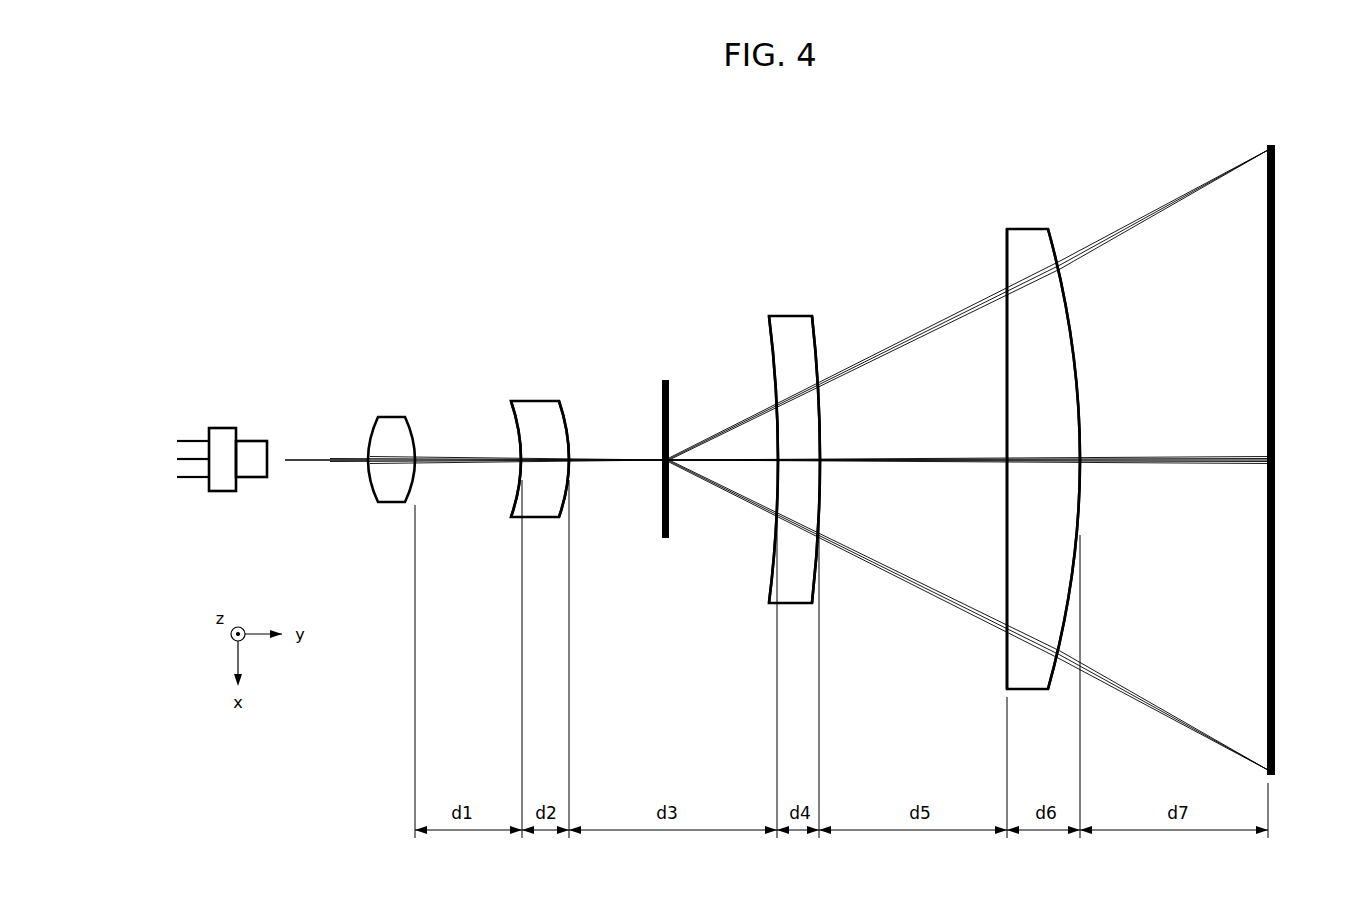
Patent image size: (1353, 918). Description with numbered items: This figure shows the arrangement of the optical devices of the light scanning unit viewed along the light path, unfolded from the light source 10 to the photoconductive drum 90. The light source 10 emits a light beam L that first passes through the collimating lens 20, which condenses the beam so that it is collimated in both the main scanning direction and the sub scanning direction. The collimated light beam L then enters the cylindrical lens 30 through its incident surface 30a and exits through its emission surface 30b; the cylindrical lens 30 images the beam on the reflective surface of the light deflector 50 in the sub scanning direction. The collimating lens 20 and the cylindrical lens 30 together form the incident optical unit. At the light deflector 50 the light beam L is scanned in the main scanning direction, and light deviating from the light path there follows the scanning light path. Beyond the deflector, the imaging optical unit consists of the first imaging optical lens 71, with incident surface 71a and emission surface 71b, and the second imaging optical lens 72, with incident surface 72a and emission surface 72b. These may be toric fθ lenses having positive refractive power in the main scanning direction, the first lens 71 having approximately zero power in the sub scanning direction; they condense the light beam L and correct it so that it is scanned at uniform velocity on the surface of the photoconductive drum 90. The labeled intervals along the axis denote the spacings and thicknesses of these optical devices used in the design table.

The light source 10 is at (224, 432).
The light beam L is at (314, 456).
The collimating lens 20 is at (392, 425).
The cylindrical lens 30 is at (536, 392).
The incident surface of the cylindrical lens 30a is at (519, 430).
The emission surface of the cylindrical lens 30b is at (567, 425).
The light deflector 50 is at (666, 380).
The first imaging optical lens 71 is at (791, 307).
The incident surface of the first imaging optical lens 71a is at (768, 342).
The emission surface of the first imaging optical lens 71b is at (815, 343).
The second imaging optical lens 72 is at (1027, 221).
The incident surface of the second imaging optical lens 72a is at (1005, 263).
The emission surface of the second imaging optical lens 72b is at (1056, 246).
The photoconductive drum 90 is at (1271, 145).